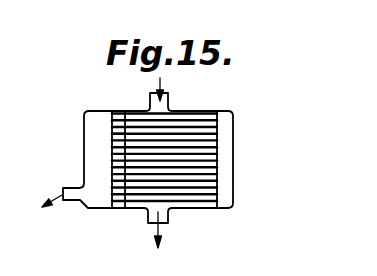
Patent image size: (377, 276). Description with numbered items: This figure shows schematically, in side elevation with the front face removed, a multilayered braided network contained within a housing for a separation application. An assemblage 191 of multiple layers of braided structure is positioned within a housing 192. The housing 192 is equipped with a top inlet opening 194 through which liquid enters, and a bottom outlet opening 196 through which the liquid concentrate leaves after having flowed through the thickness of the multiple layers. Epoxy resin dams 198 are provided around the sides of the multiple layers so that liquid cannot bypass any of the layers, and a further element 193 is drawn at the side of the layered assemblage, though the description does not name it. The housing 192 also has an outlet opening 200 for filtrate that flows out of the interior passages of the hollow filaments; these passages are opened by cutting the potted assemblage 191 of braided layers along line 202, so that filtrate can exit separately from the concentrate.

The assemblage 191 is at (217, 142).
The housing 192 is at (90, 97).
The tube sheet 193 is at (127, 104).
The top inlet opening 194 is at (168, 100).
The bottom outlet opening 196 is at (168, 222).
The epoxy resin dams 198 is at (224, 125).
The outlet opening 200 is at (82, 188).
The line 202 is at (112, 140).